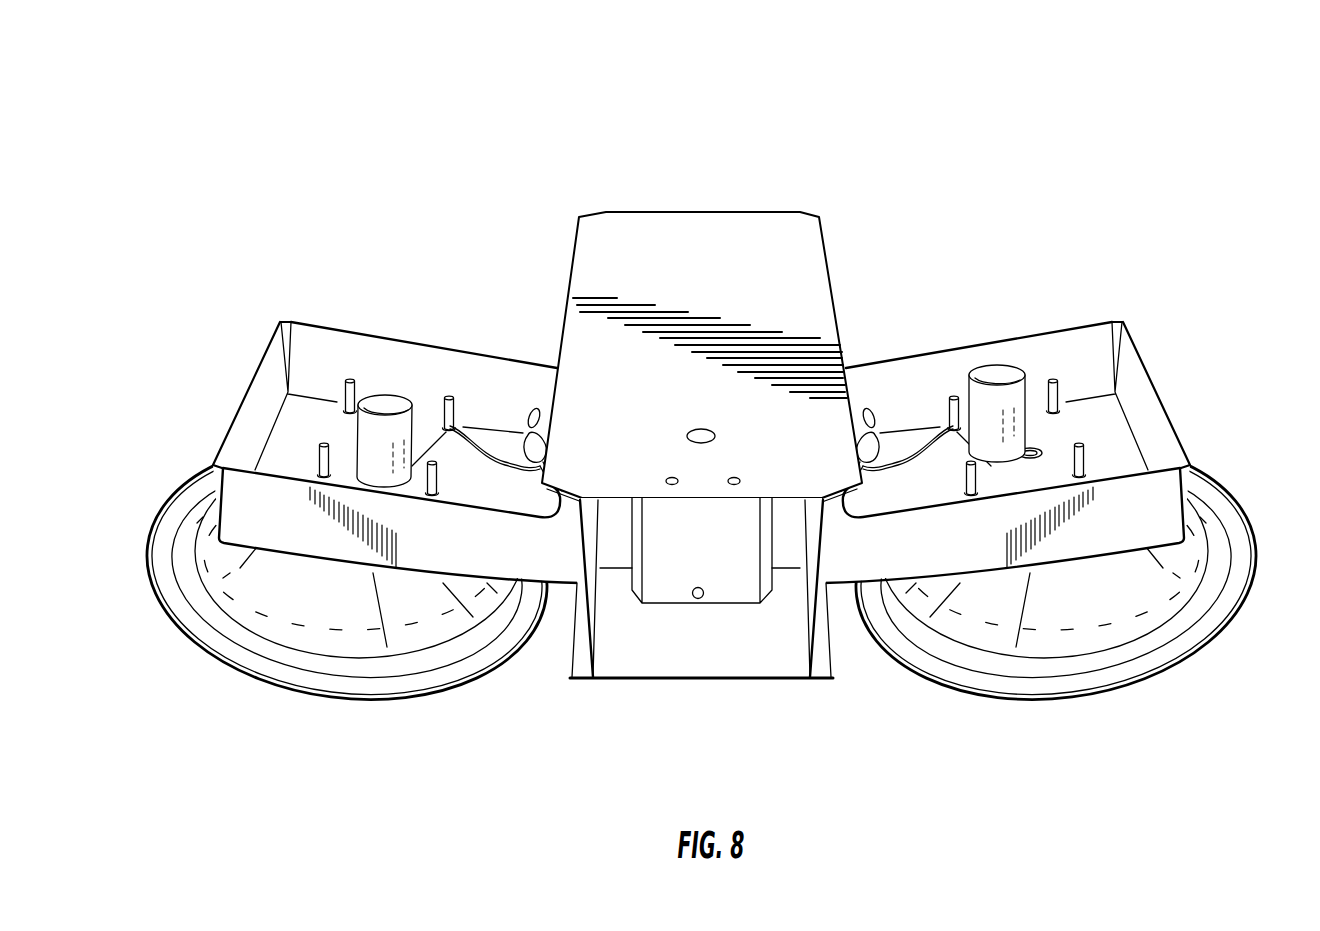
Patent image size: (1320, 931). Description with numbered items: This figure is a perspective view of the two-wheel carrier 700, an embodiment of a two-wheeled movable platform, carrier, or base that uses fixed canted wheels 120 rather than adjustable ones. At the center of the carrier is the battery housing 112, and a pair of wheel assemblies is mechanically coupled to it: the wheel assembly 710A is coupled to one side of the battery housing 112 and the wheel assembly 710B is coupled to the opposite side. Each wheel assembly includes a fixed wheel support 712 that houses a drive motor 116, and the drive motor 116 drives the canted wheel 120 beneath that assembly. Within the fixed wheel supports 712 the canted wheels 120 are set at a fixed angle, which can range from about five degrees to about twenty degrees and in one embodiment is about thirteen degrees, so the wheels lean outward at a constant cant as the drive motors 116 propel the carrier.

The two-wheel carrier 700 is at (607, 418).
The wheel assembly 710A is at (1150, 313).
The wheel assembly 710B is at (232, 318).
The fixed wheel support 712 is at (922, 355).
The drive motor 116 is at (1000, 365).
The canted wheel 120 is at (304, 700).
The battery housing 112 is at (797, 683).